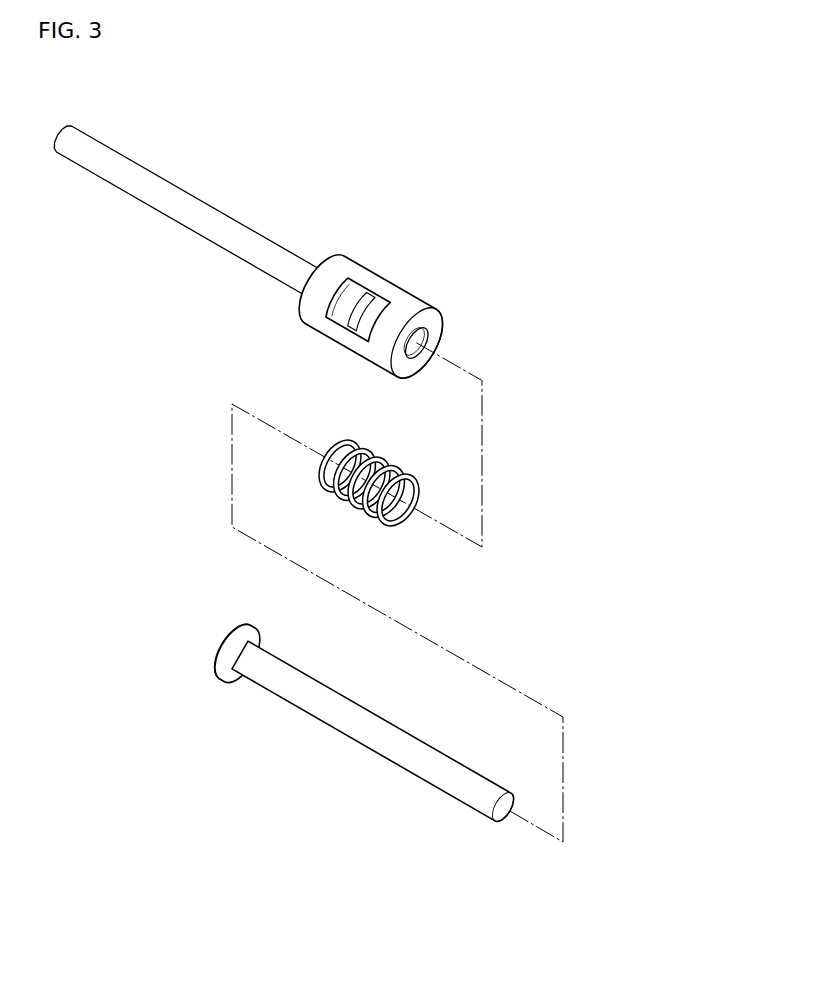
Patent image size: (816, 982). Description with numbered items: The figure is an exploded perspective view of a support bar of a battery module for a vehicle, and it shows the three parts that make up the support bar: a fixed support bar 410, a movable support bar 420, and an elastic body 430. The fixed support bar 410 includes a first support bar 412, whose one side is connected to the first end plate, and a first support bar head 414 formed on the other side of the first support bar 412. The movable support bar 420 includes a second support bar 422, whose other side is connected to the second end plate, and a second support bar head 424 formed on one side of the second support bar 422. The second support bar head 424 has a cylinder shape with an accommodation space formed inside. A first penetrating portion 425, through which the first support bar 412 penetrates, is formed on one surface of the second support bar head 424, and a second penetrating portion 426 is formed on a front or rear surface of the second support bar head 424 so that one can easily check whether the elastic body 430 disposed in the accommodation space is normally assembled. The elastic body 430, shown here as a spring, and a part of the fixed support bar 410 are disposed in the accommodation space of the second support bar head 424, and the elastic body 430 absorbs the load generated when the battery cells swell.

The fixed support bar 410 is at (325, 746).
The first support bar 412 is at (355, 723).
The first support bar head 414 is at (224, 680).
The movable support bar 420 is at (325, 235).
The second support bar 422 is at (213, 232).
The second support bar head 424 is at (380, 280).
The first penetrating portion 425 is at (426, 341).
The second penetrating portion 426 is at (338, 313).
The elastic body 430 is at (400, 527).